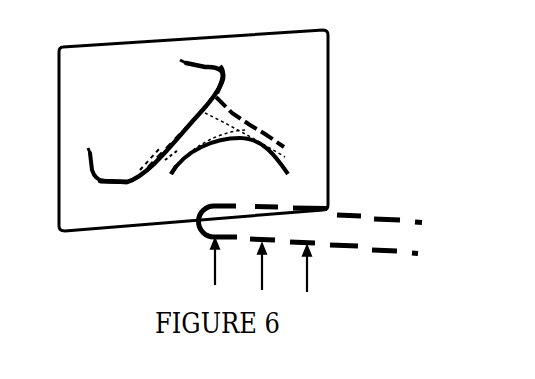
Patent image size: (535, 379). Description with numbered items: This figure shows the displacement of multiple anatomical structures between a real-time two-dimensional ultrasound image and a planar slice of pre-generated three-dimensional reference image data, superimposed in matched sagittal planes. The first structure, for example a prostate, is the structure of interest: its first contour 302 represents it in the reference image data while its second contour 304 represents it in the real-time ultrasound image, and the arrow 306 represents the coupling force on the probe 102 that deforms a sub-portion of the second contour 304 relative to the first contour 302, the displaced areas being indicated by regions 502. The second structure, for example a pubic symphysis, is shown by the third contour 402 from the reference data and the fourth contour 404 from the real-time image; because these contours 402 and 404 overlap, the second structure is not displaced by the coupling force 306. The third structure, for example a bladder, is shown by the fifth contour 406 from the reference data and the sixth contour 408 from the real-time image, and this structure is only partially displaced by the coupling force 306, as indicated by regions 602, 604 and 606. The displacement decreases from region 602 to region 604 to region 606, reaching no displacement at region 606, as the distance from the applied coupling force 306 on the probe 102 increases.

The probe 102 is at (345, 213).
The first contour 302 is at (194, 160).
The second contour 304 is at (172, 160).
The coupling force 306 is at (307, 288).
The third contour 402 is at (236, 118).
The fourth contour 404 is at (222, 72).
The fifth contour 406 is at (126, 178).
The sixth contour 408 is at (167, 131).
The regions 502 is at (173, 176).
The region 602 is at (148, 147).
The region 604 is at (117, 185).
The region 606 is at (197, 70).